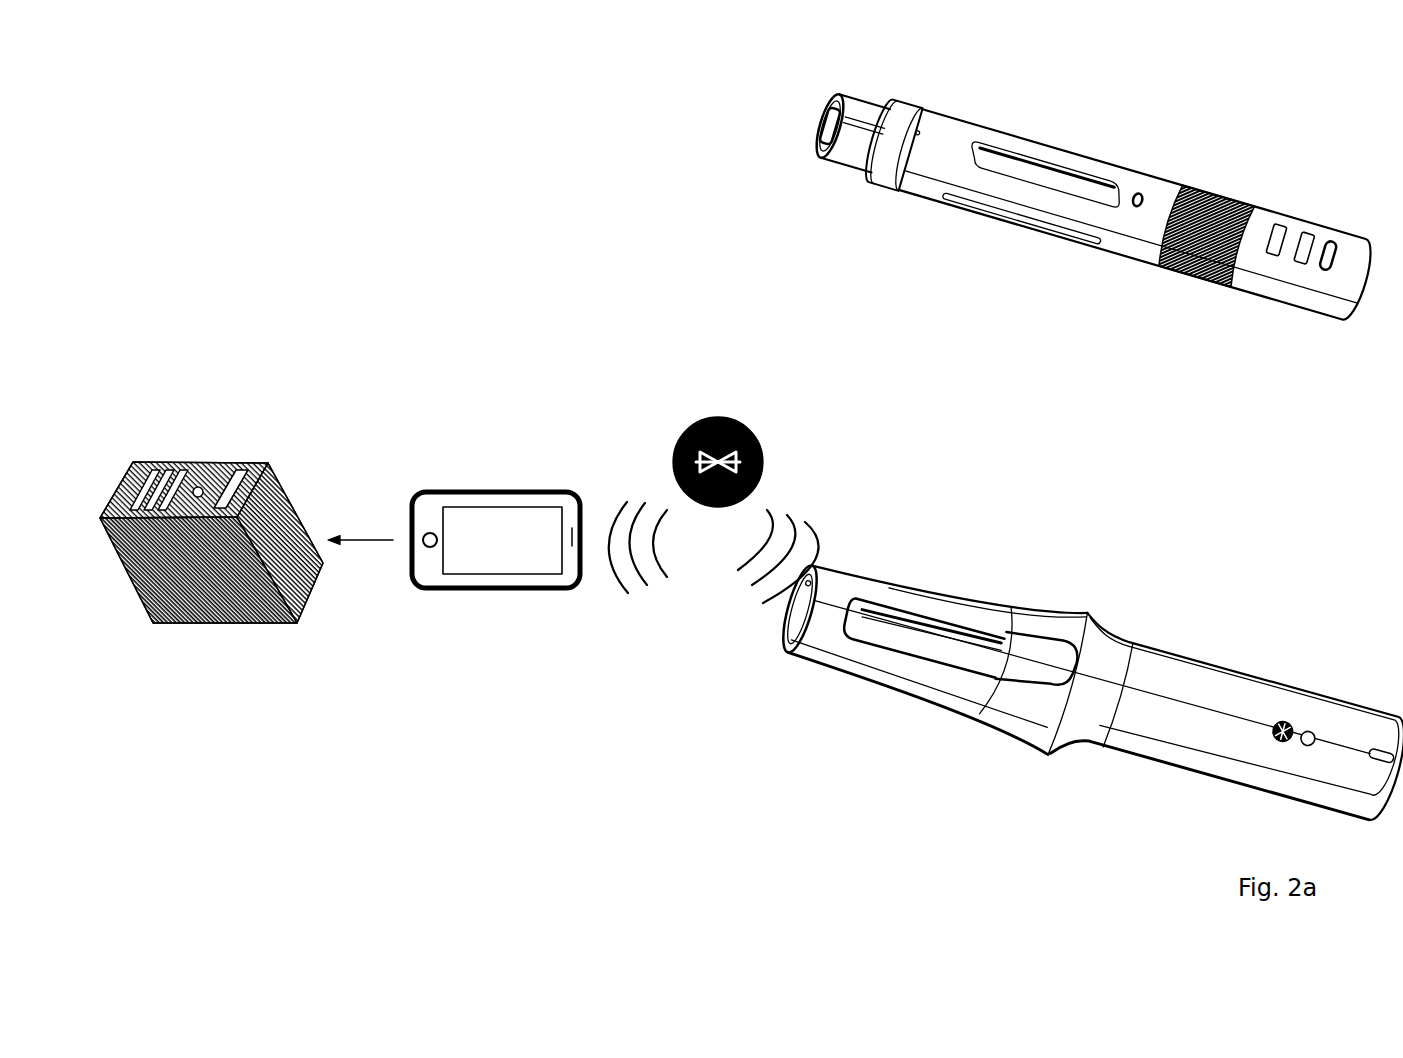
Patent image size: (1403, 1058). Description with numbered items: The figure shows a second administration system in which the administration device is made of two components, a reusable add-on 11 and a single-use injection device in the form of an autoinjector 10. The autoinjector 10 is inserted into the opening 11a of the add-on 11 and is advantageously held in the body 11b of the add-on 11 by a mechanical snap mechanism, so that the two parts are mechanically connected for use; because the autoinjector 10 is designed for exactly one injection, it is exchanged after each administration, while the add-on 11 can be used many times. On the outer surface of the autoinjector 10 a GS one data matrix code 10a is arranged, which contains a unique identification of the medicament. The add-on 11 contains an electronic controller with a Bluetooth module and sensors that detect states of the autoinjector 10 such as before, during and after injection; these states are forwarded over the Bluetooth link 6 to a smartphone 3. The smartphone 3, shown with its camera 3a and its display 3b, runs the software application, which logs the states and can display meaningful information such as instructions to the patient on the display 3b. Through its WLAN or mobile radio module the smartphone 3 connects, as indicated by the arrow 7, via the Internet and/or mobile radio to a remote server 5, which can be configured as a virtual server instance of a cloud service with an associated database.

The smartphone 3 is at (512, 581).
The camera 3a is at (573, 579).
The display of mobile device 3b is at (500, 526).
The remote server 5 is at (239, 671).
The Bluetooth link 6 is at (705, 435).
The data transfer arrow 7 is at (370, 530).
The autoinjector 10 is at (1092, 233).
The GS 1 data matrix code 10a is at (1204, 235).
The add-on 11 is at (1041, 690).
The coupling end of handpiece 11a is at (799, 608).
The housing of handpiece 11b is at (782, 632).